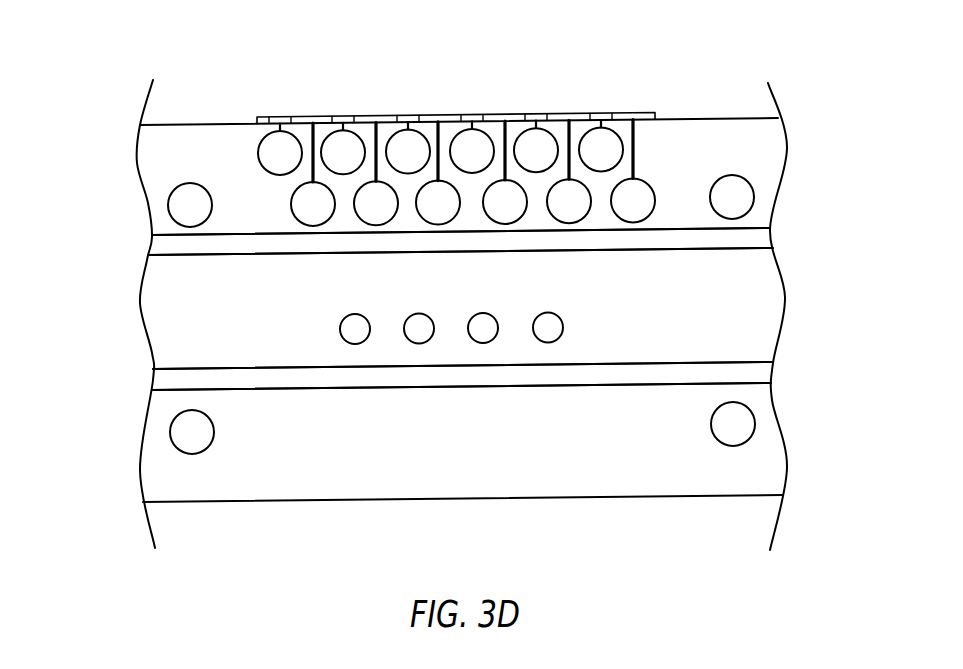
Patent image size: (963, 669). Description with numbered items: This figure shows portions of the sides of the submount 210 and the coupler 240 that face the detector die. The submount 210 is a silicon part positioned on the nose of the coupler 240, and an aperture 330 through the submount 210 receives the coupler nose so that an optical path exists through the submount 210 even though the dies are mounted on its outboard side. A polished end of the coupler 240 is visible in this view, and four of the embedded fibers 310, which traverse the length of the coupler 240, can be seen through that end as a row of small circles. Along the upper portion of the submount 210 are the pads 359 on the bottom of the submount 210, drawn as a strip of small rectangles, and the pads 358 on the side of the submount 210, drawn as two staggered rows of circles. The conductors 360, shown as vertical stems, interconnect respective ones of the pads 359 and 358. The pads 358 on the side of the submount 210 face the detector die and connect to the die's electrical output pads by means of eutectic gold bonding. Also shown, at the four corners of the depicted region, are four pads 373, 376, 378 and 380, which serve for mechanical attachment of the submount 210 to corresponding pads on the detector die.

The submount 210 is at (617, 523).
The coupler 240 is at (813, 270).
The fibers 310 is at (574, 326).
The aperture 330 is at (167, 382).
The pads 358 is at (670, 192).
The pads 359 is at (472, 94).
The conductors 360 is at (650, 153).
The pad 373 is at (168, 205).
The pad 376 is at (752, 196).
The pad 378 is at (170, 432).
The pad 380 is at (758, 421).